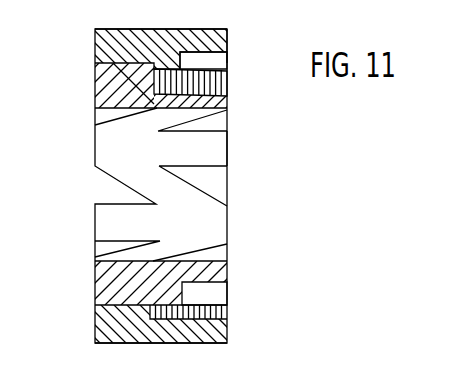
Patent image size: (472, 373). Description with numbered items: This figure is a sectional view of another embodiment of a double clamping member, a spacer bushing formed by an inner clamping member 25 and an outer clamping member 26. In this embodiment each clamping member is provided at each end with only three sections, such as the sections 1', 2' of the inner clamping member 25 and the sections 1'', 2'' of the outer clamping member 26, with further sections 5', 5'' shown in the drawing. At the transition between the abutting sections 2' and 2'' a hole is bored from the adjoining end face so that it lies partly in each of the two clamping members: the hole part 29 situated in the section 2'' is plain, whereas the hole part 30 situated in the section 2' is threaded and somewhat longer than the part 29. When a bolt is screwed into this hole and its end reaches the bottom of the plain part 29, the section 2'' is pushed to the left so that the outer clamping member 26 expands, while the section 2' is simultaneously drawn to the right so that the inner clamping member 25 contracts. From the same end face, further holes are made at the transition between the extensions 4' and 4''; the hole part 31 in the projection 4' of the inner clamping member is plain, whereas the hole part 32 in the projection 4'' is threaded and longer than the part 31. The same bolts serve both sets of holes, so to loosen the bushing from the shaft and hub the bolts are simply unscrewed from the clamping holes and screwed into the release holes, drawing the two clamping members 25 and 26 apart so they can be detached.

The outer clamping member 26 is at (91, 47).
The outer sealing lip 5'' is at (161, 16).
The section 2'' is at (214, 31).
The hole part 29 is at (215, 62).
The hole part 30 is at (227, 80).
The inner clamping member 25 is at (91, 97).
The sealing lip 5' is at (104, 159).
The section 2' is at (199, 162).
The extension 4' is at (204, 204).
The section 1' is at (159, 283).
The hole part 31 is at (220, 284).
The hole part 32 is at (226, 312).
The section 1'' is at (159, 324).
The extension 4'' is at (178, 335).